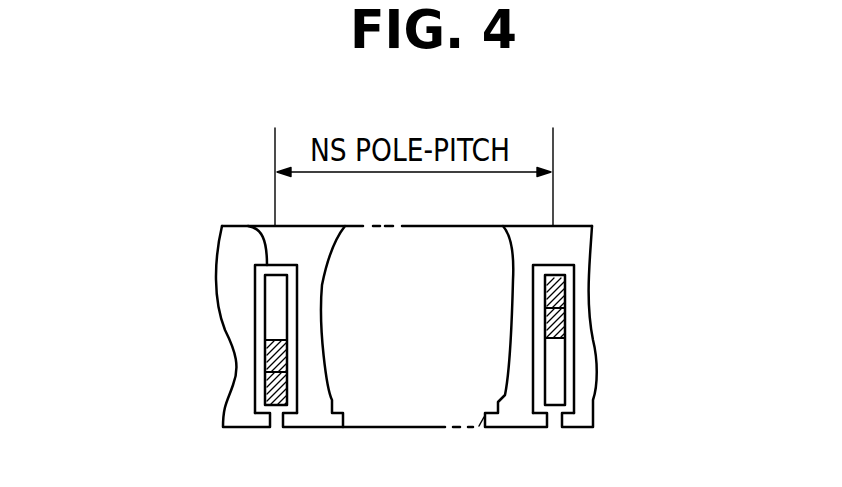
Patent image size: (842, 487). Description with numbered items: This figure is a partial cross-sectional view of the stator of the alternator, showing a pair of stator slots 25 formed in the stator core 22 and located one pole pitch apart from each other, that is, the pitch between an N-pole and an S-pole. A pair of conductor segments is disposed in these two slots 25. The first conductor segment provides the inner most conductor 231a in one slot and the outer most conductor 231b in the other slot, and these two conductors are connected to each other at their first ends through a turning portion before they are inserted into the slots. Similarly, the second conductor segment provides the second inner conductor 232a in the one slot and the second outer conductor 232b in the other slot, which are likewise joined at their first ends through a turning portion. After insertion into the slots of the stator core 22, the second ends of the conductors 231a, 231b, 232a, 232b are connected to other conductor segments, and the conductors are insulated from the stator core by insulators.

The stator core 22 is at (580, 253).
The slot 25 is at (247, 226).
The inner most conductor 231a is at (272, 388).
The outer most conductor 231b is at (560, 290).
The second inner conductor 232a is at (272, 355).
The second outer conductor 232b is at (557, 332).